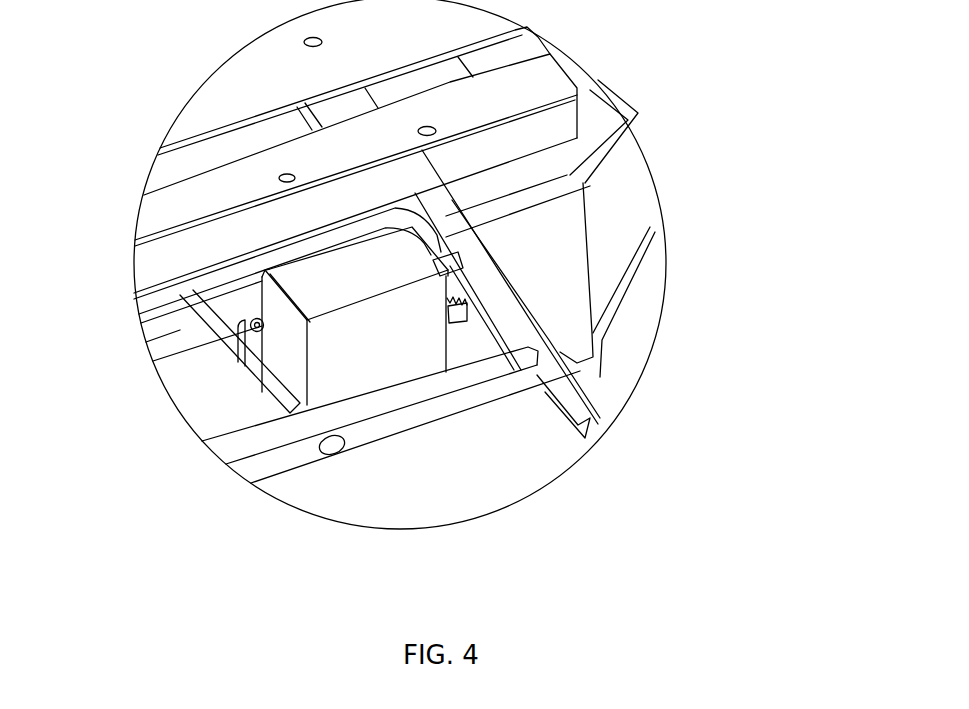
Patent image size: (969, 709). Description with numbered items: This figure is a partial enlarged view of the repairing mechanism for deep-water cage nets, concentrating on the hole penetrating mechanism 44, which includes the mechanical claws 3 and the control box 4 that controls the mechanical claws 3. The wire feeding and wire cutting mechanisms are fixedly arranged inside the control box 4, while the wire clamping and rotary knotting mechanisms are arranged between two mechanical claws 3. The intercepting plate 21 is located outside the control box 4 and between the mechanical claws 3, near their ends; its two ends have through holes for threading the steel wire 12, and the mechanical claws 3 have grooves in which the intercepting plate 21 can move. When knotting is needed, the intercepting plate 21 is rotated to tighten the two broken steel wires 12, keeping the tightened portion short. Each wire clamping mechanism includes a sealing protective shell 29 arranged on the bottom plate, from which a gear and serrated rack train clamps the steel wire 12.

The control box 4 is at (490, 100).
The hole penetrating mechanism 44 is at (767, 52).
The mechanical claw 3 is at (490, 279).
The steel wire 12 is at (482, 312).
The sealing protective shell 29 is at (360, 330).
The intercepting plate 21 is at (440, 406).